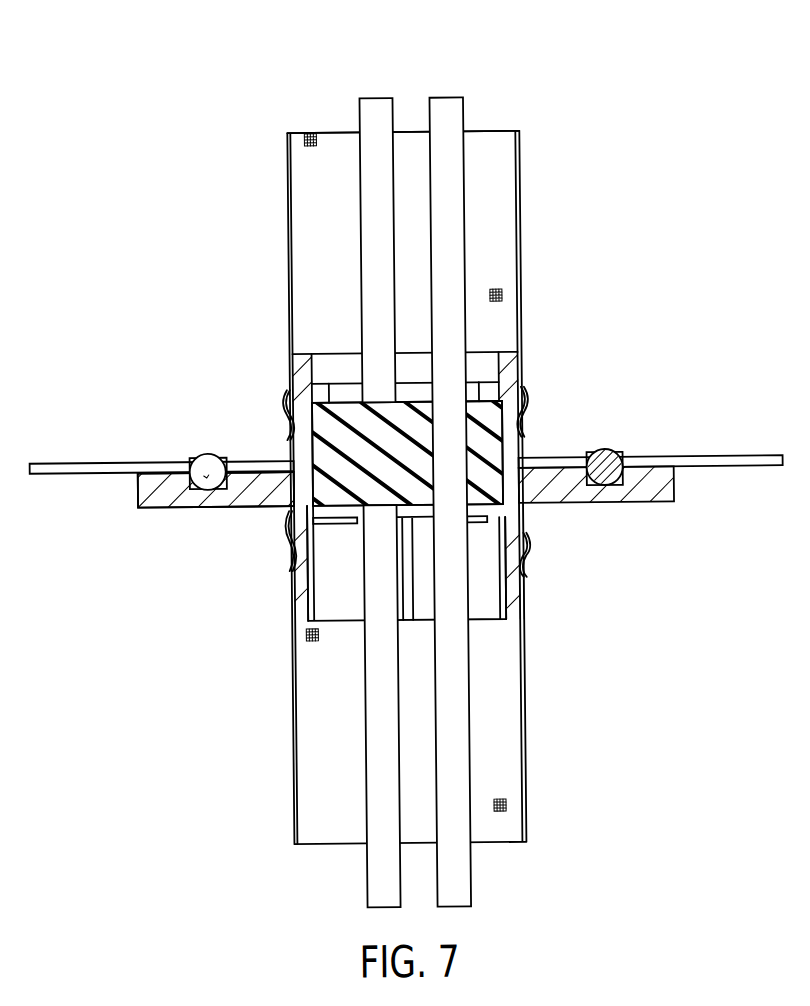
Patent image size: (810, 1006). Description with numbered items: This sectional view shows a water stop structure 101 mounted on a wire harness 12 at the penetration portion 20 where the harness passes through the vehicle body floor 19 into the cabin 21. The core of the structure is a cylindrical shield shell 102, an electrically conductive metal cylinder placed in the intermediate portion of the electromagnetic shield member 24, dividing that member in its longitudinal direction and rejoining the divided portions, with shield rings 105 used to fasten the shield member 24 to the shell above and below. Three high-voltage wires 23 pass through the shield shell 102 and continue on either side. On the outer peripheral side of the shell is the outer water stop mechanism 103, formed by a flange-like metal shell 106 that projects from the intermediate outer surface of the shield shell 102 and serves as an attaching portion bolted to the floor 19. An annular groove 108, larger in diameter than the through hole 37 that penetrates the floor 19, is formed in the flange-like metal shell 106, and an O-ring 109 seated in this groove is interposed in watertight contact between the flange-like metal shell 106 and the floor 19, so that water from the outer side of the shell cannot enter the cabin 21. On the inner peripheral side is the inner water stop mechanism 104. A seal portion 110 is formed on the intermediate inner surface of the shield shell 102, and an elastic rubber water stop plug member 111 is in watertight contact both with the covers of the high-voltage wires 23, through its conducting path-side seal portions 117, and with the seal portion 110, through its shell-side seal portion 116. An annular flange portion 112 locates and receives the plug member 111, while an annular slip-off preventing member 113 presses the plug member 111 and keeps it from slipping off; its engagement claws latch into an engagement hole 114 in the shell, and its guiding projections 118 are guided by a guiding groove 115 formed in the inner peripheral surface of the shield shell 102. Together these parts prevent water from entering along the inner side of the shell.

The wire harness 12 is at (326, 121).
The vehicle body floor 19 is at (725, 458).
The penetration portion 20 is at (116, 700).
The cabin 21 is at (652, 66).
The high-voltage wires 23 is at (452, 108).
The electromagnetic shield member 24 is at (511, 156).
The through hole 37 is at (551, 463).
The water stop structure 101 is at (197, 334).
The cylindrical shield shell 102 is at (537, 546).
The outer water stop mechanism 103 is at (63, 481).
The inner water stop mechanism 104 is at (202, 569).
The shield rings 105 is at (528, 411).
The flange-like metal shell 106 is at (147, 484).
The annular groove 108 is at (203, 488).
The O-ring 109 is at (175, 488).
The seal portion 110 is at (451, 445).
The water stop plug member 111 is at (356, 404).
The annular flange portion 112 is at (288, 442).
The slip-off preventing member 113 is at (335, 519).
The engagement hole 114 is at (311, 560).
The guiding groove 115 is at (308, 530).
The shell-side seal portion 116 is at (291, 429).
The conducting path-side seal portions 117 is at (441, 440).
The guiding projections 118 is at (291, 532).